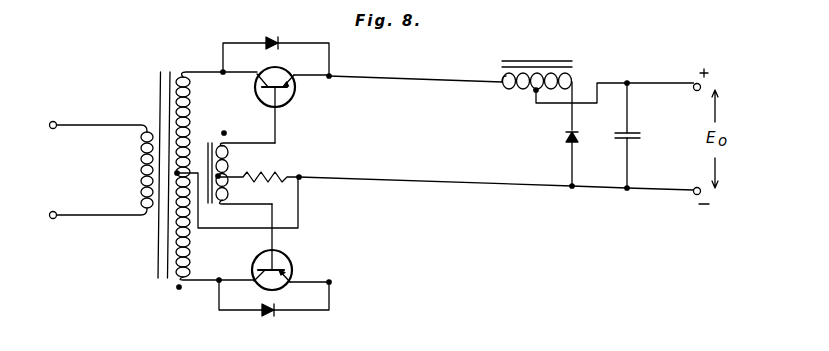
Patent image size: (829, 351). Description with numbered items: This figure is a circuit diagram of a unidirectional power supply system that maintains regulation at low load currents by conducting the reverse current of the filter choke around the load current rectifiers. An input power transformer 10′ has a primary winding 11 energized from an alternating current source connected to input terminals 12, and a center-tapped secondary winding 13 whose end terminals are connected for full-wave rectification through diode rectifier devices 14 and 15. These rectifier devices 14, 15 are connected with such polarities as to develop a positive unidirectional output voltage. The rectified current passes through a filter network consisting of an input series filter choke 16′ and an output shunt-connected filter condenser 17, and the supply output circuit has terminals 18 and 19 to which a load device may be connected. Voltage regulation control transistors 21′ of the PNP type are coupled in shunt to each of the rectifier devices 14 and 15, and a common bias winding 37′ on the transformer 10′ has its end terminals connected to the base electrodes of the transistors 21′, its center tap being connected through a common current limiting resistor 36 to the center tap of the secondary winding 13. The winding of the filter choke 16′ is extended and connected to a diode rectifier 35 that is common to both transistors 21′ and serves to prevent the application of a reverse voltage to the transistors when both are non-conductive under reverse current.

The input power transformer 10′ is at (163, 70).
The primary winding 11 is at (143, 165).
The input terminals 12 is at (53, 130).
The center-tapped secondary winding 13 is at (190, 105).
The diode rectifier device 14 is at (271, 39).
The diode rectifier device 15 is at (268, 318).
The filter choke 16′ is at (510, 91).
The filter condenser 17 is at (640, 135).
The output terminal 18 is at (693, 85).
The output terminal 19 is at (692, 195).
The voltage regulation control transistors 21′ is at (290, 102).
The diode rectifier 35 is at (566, 138).
The current limiting resistor 36 is at (262, 179).
The common bias winding 37′ is at (230, 152).